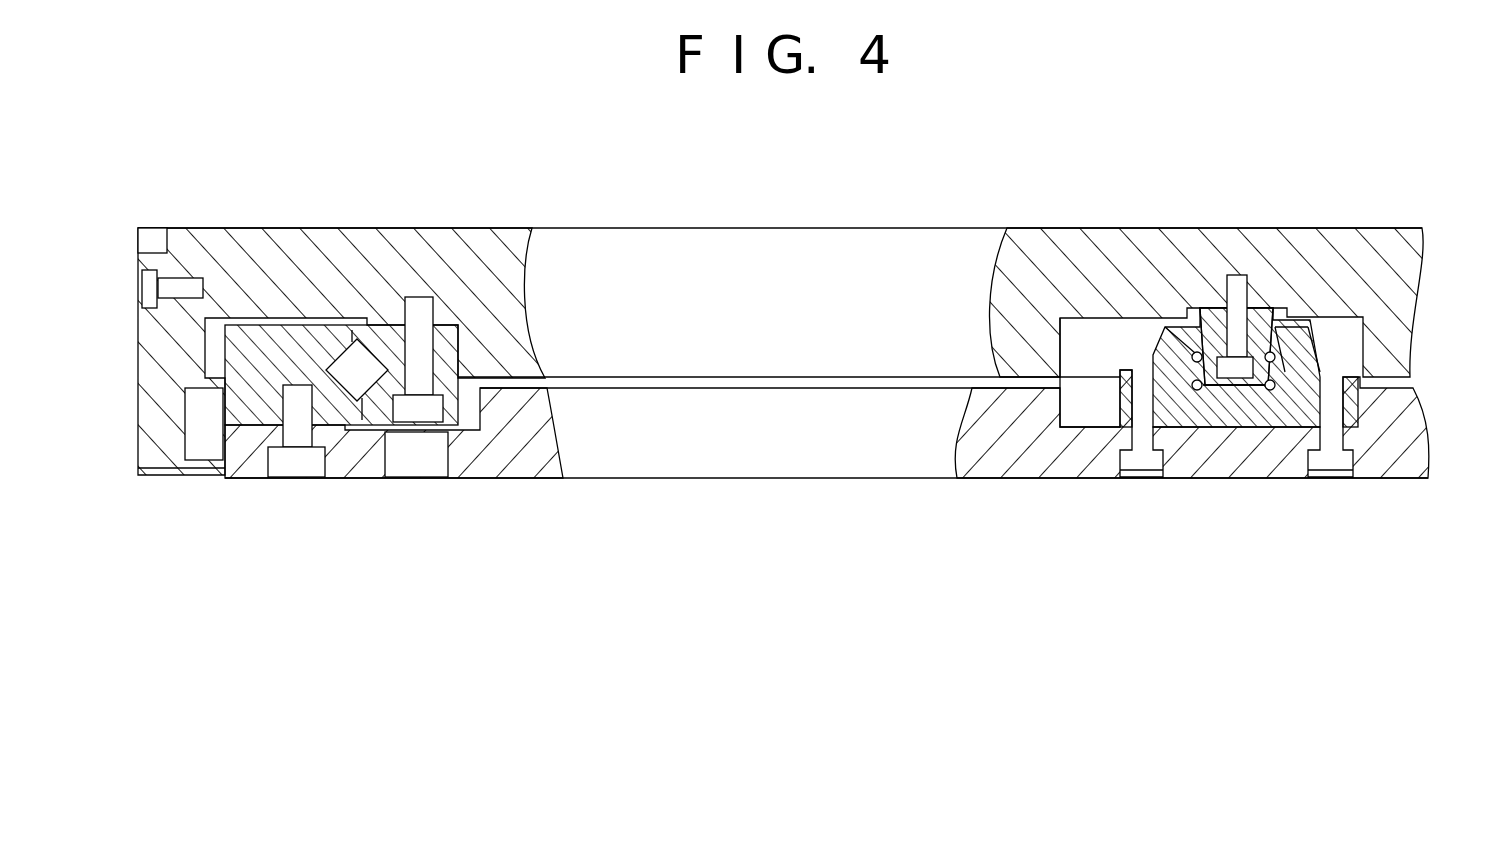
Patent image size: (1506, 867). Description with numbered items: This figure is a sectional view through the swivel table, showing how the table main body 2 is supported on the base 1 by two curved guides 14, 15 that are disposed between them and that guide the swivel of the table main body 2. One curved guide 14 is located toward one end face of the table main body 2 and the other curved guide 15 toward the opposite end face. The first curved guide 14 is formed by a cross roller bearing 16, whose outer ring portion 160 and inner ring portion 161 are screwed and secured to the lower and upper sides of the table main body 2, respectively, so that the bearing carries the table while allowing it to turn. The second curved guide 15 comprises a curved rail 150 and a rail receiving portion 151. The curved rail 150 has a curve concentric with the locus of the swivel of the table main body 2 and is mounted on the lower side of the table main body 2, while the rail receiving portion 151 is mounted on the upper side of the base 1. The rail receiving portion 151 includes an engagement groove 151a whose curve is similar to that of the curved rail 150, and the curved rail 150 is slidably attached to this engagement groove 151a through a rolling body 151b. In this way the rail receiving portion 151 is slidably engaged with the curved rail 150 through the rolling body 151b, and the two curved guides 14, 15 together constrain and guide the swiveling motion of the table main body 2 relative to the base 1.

The base 1 is at (779, 478).
The table main body 2 is at (902, 230).
The curved guide 14 is at (336, 297).
The curved guide 15 is at (1263, 300).
The cross roller bearing 16 is at (458, 347).
The curved rail 150 is at (1262, 373).
The rail receiving portion 151 is at (1203, 415).
The engagement groove 151a is at (1153, 354).
The rolling body 151b is at (1277, 354).
The outer ring portion 160 is at (457, 403).
The inner ring portion 161 is at (260, 410).